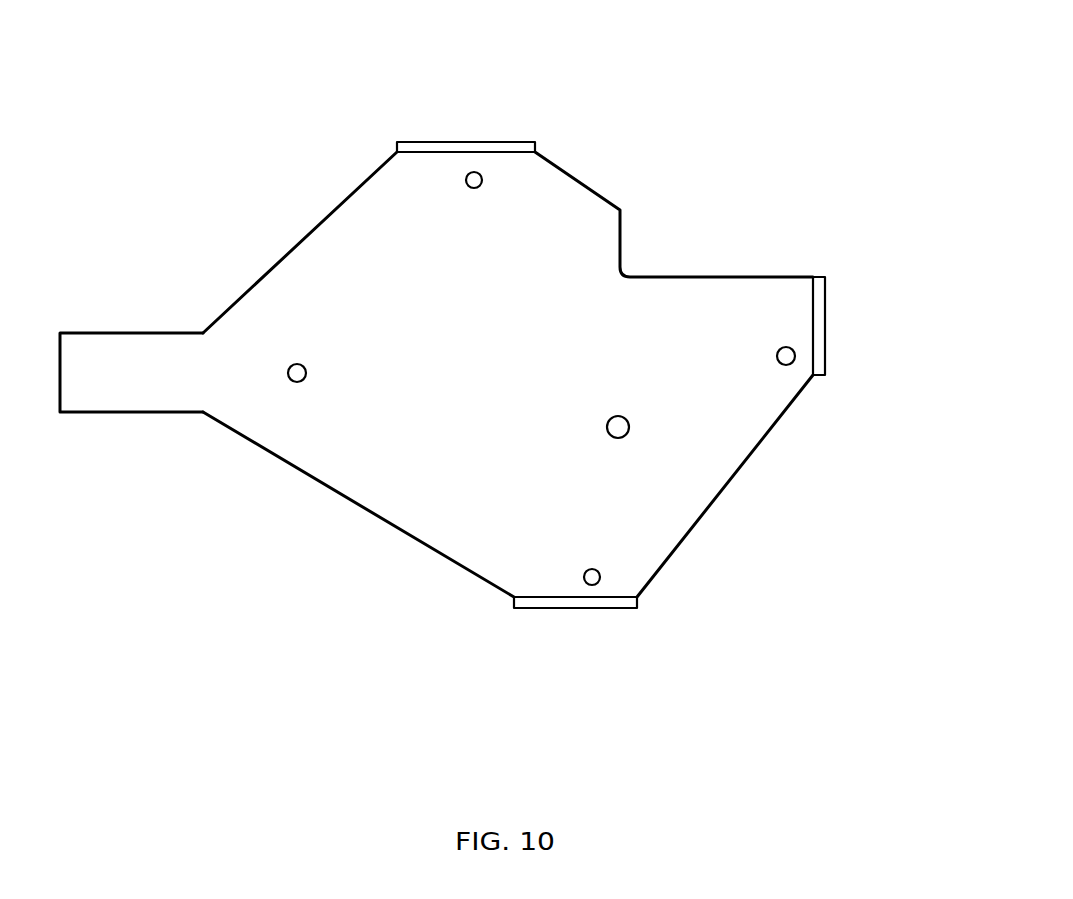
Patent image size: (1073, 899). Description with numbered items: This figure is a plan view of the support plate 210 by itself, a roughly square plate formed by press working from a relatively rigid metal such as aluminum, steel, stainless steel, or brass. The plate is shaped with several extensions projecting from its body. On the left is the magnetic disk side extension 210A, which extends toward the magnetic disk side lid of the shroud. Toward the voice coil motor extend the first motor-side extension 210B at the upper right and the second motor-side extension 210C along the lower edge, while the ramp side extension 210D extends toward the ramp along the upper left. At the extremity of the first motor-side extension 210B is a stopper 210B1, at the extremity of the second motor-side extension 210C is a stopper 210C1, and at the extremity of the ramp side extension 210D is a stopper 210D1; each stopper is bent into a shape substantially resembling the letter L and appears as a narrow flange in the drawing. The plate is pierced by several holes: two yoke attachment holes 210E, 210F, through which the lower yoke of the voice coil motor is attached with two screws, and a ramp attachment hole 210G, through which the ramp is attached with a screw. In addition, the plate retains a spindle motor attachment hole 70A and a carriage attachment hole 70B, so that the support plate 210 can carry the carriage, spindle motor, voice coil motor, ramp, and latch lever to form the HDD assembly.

The support plate 210 is at (553, 378).
The magnetic disk side extension 210A is at (136, 346).
The first motor-side extension 210B is at (740, 300).
The stopper 210B1 is at (825, 352).
The second motor-side extension 210C is at (495, 545).
The stopper 210C1 is at (622, 602).
The ramp side extension 210D is at (360, 268).
The stopper 210D1 is at (438, 147).
The yoke attachment hole 210E is at (790, 364).
The yoke attachment hole 210F is at (600, 577).
The ramp attachment hole 210G is at (478, 175).
The spindle motor attachment hole 70A is at (292, 365).
The carriage attachment hole 70B is at (629, 428).